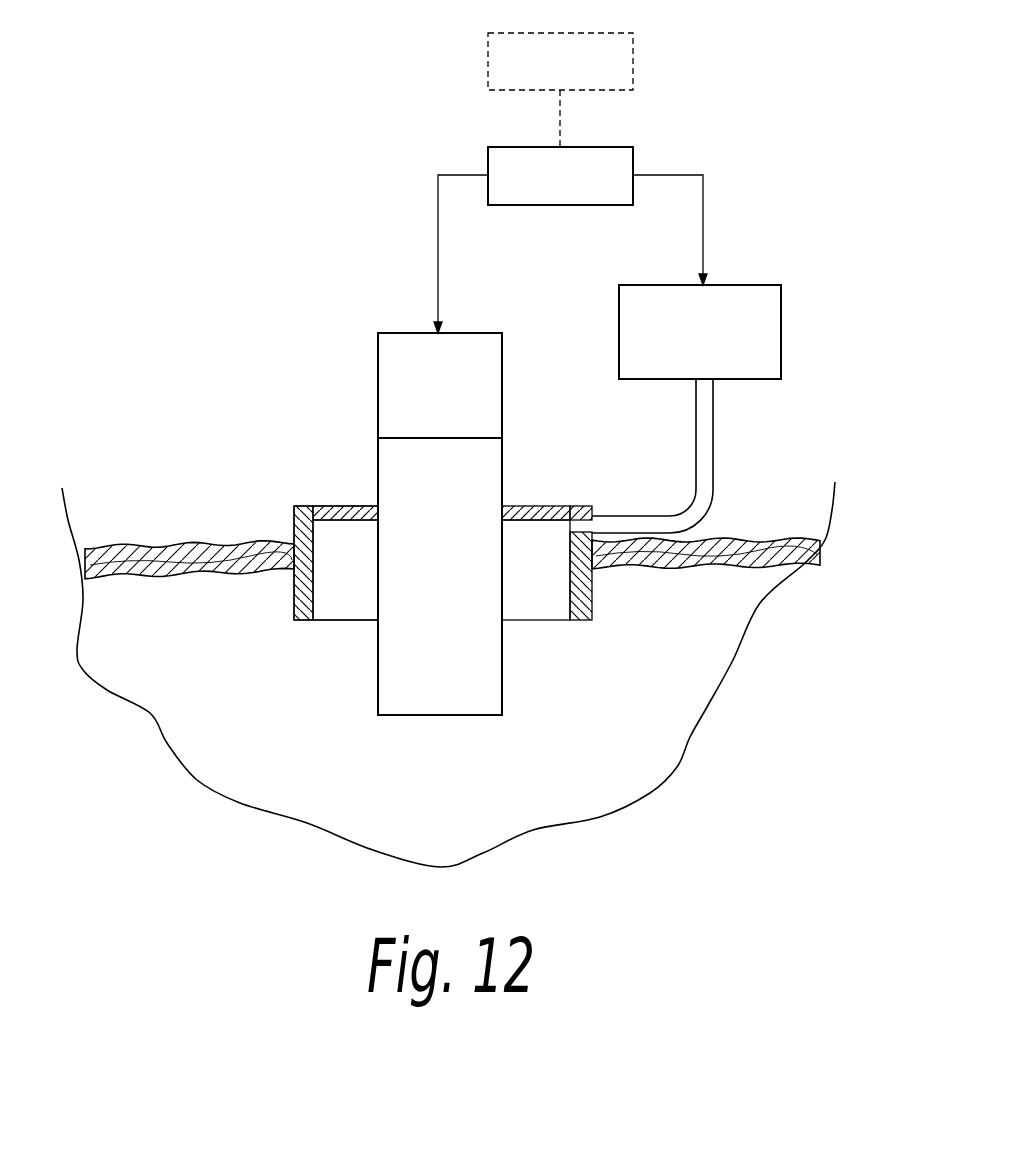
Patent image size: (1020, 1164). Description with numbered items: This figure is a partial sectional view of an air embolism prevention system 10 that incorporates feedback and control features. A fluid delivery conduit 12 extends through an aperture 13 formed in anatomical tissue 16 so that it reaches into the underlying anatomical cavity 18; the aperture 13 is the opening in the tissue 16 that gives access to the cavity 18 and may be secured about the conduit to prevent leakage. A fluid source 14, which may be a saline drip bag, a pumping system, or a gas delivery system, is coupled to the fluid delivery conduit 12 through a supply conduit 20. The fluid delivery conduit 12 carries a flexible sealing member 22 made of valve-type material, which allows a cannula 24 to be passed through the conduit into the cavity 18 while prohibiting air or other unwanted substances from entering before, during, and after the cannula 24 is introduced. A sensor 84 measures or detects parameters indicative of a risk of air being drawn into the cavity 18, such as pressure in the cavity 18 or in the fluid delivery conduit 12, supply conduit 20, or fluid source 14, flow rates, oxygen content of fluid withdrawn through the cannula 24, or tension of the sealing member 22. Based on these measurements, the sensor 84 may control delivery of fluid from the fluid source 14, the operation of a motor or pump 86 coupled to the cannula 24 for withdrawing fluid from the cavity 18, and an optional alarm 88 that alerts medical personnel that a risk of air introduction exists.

The air embolism prevention system 10 is at (764, 257).
The fluid delivery conduit 12 is at (292, 525).
The aperture 13 is at (288, 570).
The fluid source 14 is at (784, 353).
The anatomical tissue 16 is at (740, 540).
The anatomical cavity 18 is at (610, 727).
The supply conduit 20 is at (713, 470).
The flexible sealing member 22 is at (533, 503).
The cannula 24 is at (378, 477).
The sensor 84 is at (633, 164).
The motor 86 is at (378, 382).
The alarm 88 is at (488, 81).